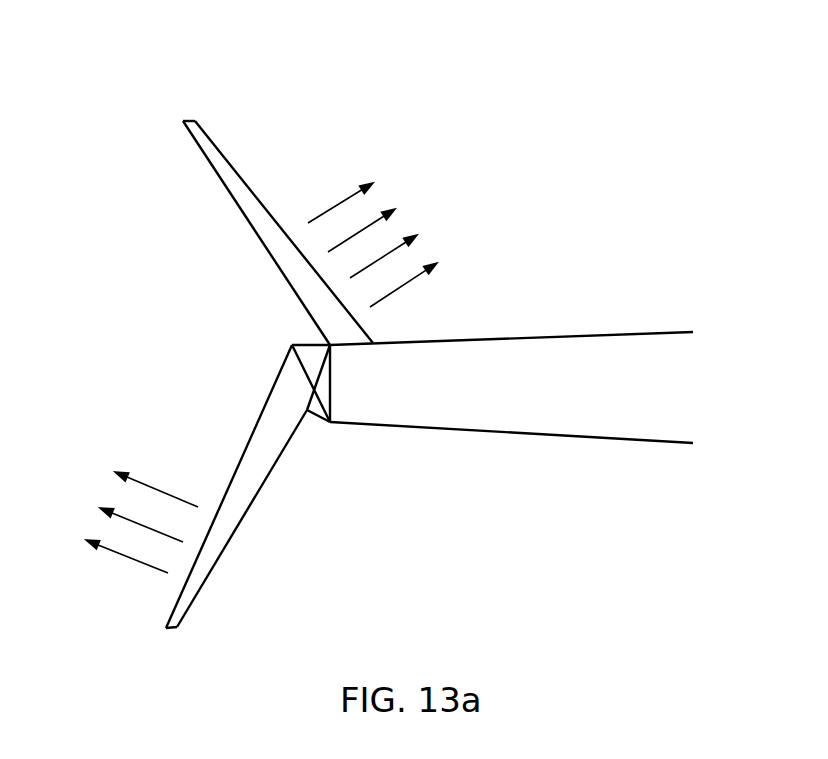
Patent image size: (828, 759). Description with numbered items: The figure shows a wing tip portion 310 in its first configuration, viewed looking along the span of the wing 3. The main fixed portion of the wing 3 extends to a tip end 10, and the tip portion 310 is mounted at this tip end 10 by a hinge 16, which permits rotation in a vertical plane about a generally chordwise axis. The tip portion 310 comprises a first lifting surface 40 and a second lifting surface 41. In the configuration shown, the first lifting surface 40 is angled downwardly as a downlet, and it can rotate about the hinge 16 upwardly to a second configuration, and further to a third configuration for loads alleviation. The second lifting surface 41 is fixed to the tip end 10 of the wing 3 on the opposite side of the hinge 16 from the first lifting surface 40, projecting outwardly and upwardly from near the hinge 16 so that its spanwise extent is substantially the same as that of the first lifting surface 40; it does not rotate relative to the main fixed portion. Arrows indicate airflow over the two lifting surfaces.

The wing 3 is at (538, 358).
The tip end 10 is at (370, 412).
The hinge 16 is at (289, 326).
The first lifting surface 40 is at (280, 427).
The second lifting surface 41 is at (235, 182).
The tip portion 310 is at (277, 524).